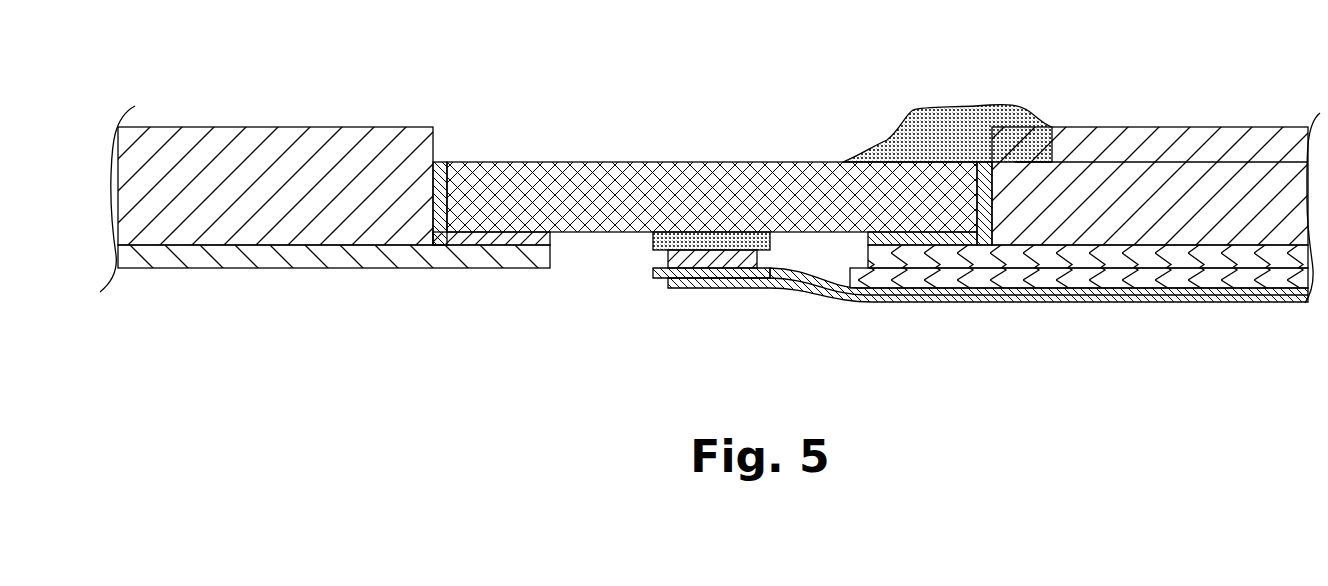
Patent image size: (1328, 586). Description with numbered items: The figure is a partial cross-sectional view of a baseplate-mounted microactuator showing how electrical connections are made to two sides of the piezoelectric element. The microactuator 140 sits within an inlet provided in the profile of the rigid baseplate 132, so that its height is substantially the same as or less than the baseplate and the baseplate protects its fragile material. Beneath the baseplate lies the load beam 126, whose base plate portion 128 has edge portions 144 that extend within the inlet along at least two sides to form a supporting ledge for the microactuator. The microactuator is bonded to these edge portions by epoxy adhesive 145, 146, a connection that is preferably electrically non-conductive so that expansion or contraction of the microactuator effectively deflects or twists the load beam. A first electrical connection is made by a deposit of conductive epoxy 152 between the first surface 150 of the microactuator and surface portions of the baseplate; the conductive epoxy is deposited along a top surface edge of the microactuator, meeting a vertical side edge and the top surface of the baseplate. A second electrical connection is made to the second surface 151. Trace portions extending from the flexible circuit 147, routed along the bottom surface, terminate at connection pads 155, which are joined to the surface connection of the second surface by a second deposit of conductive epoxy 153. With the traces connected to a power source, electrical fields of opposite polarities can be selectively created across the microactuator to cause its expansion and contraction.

The load beam 126 is at (1190, 258).
The base plate portion 128 is at (325, 255).
The baseplate 132 is at (232, 152).
The microactuator 140 is at (563, 185).
The edge portions 144 is at (490, 255).
The epoxy adhesive 145 is at (534, 250).
The epoxy adhesive 146 is at (876, 254).
The flexible circuit 147 is at (1014, 312).
The first surface 150 is at (683, 160).
The second surface 151 is at (835, 233).
The conductive epoxy 152 is at (985, 108).
The conductive epoxy 153 is at (653, 242).
The connection pads 155 is at (666, 270).